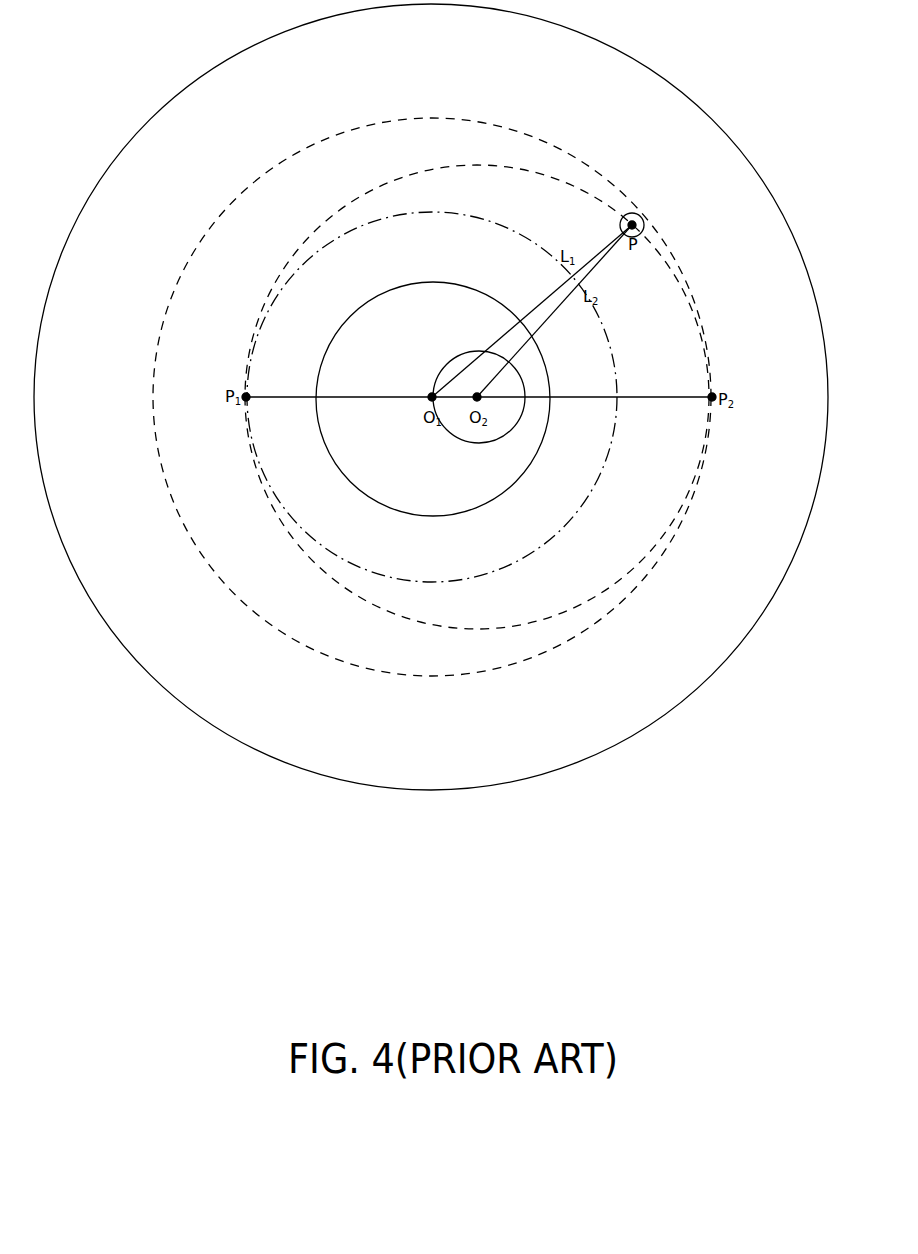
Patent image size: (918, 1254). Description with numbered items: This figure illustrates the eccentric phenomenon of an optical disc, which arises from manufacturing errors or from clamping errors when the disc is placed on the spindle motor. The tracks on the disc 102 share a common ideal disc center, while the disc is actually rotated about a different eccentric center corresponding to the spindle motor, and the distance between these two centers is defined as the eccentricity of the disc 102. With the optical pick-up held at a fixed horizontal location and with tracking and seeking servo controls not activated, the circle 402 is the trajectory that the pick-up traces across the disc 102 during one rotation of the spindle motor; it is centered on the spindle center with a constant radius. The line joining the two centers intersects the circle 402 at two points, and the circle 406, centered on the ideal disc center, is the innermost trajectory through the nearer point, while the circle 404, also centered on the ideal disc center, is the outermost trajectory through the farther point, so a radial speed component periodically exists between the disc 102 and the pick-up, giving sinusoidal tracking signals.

The disc 102 is at (803, 528).
The circle 402 is at (452, 627).
The circle 404 is at (590, 627).
The circle 406 is at (607, 458).